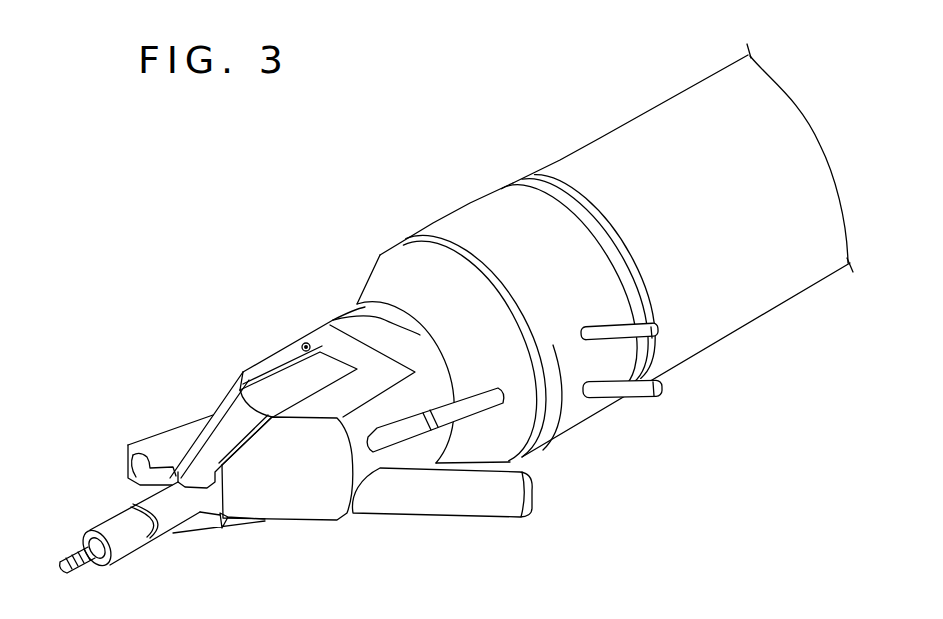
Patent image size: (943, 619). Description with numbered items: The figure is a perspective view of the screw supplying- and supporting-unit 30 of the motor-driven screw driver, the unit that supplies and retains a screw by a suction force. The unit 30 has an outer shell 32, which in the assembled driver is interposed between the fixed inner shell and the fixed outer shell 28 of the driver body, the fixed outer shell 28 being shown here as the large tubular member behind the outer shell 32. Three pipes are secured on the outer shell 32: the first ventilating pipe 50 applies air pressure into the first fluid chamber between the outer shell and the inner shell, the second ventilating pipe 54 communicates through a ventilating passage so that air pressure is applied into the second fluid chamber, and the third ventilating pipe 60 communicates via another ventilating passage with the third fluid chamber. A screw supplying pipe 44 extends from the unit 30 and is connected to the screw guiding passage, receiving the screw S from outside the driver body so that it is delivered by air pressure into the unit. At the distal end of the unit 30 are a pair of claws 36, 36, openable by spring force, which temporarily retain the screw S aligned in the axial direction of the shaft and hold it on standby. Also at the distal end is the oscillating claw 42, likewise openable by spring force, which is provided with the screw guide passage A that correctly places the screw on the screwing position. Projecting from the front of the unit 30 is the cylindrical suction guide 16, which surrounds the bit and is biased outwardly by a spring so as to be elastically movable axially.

The fixed outer shell 28 is at (793, 287).
The outer shell 32 is at (480, 214).
The second ventilating pipe 54 is at (652, 358).
The first ventilating pipe 50 is at (643, 398).
The third ventilating pipe 60 is at (533, 447).
The screw supplying pipe 44 is at (495, 503).
The screw supplying- and supporting-unit 30 is at (346, 519).
The claws 36 is at (203, 447).
The oscillating claw 42 is at (177, 443).
The screw guide passage A is at (134, 468).
The cylindrical suction guide 16 is at (120, 518).
The screw S is at (65, 557).